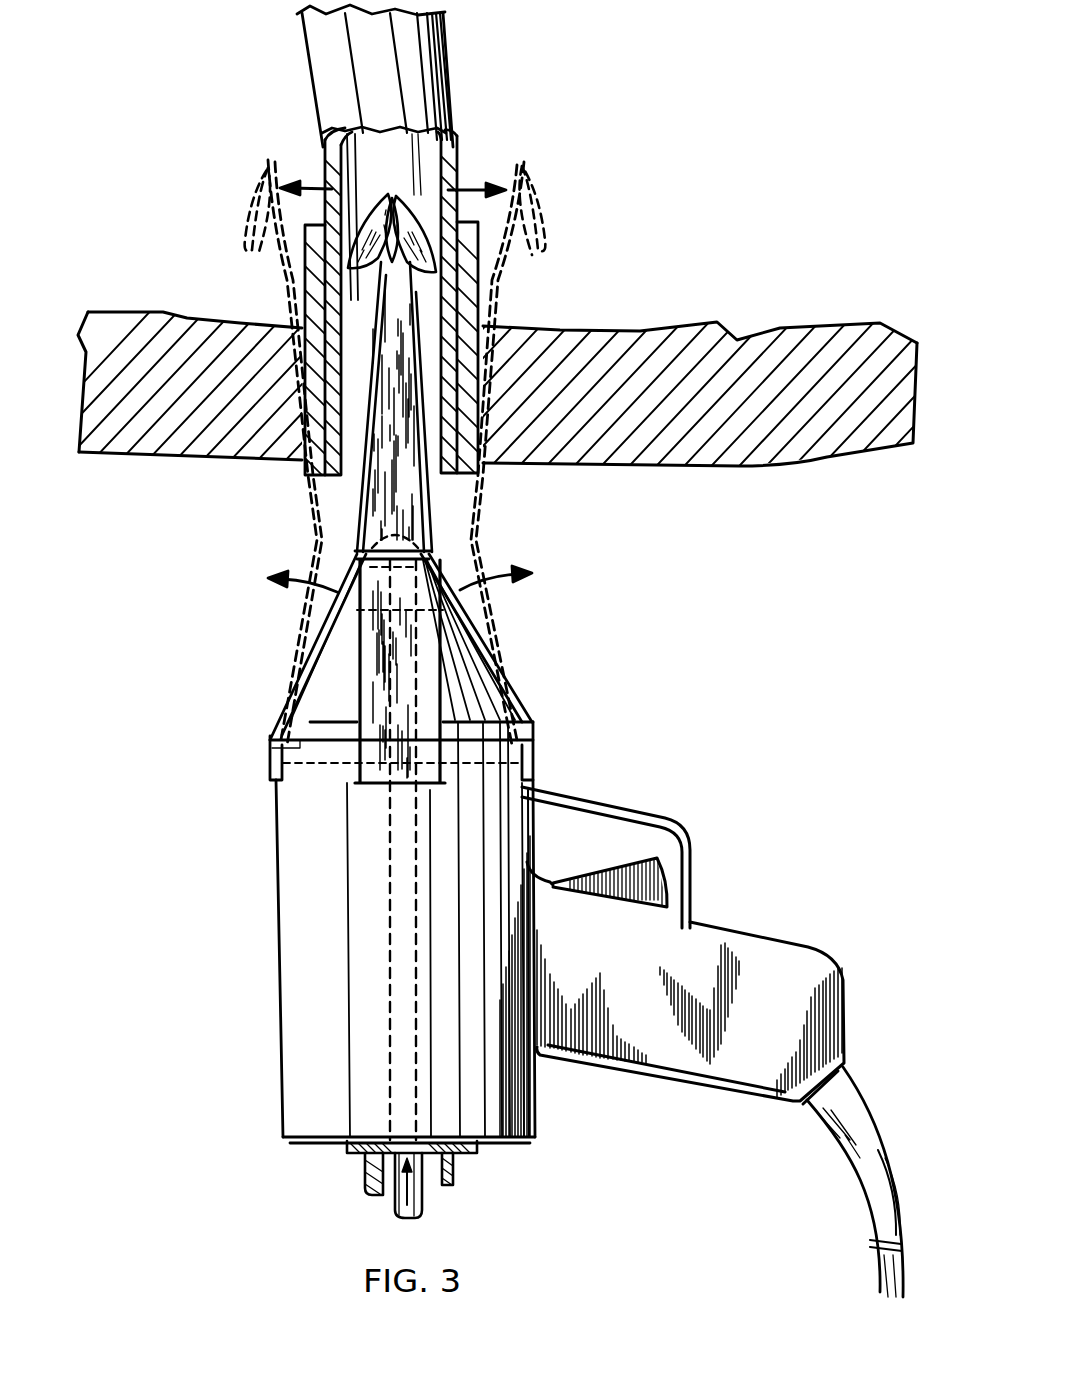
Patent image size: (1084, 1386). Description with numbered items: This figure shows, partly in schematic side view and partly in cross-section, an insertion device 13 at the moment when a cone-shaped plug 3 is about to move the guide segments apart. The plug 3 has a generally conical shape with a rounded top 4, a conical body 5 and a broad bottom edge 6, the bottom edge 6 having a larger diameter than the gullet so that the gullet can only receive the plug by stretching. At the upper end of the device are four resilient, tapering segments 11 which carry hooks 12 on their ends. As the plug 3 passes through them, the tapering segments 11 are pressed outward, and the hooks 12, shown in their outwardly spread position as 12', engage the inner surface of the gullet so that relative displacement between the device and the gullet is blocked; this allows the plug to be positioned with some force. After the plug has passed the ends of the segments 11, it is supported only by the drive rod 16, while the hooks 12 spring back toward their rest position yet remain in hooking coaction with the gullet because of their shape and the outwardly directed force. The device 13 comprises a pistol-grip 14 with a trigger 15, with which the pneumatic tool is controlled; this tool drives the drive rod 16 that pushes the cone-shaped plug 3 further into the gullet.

The cone-shaped plug 3 is at (520, 715).
The rounded top 4 is at (408, 538).
The conical body 5 is at (342, 670).
The bottom edge 6 is at (318, 735).
The resilient segments 11 is at (387, 513).
The hooks 12 is at (384, 189).
The hooks in expanded position 12' is at (390, 195).
The device 13 is at (222, 985).
The pistol-grip 14 is at (678, 1037).
The trigger 15 is at (637, 880).
The drive rod 16 is at (395, 1212).